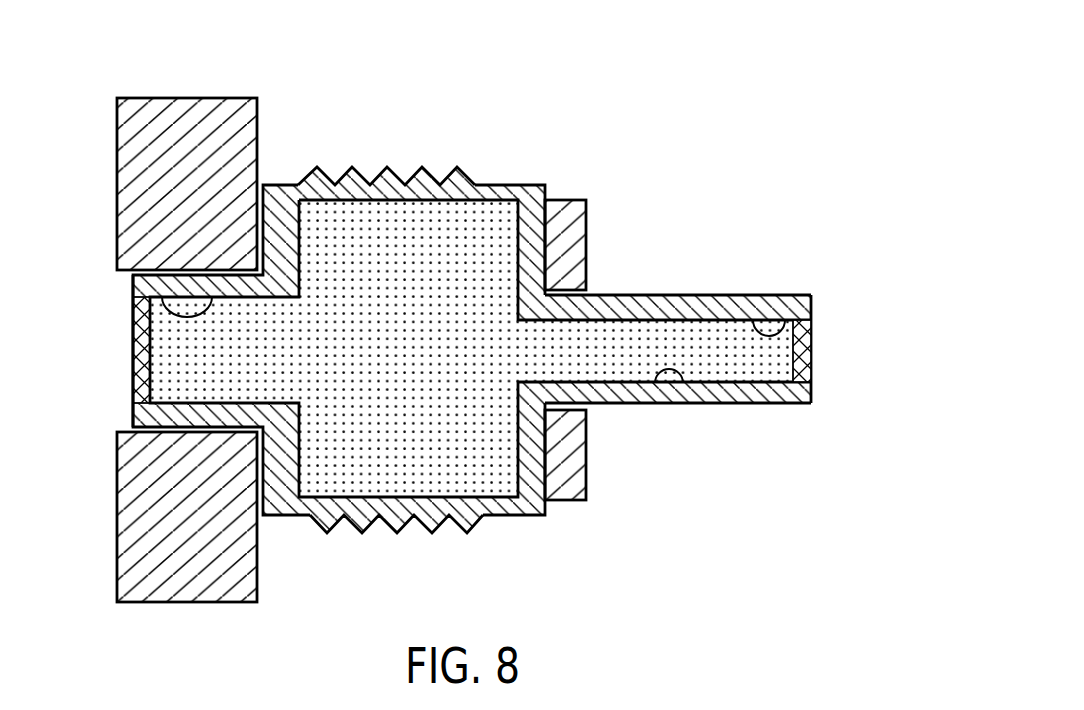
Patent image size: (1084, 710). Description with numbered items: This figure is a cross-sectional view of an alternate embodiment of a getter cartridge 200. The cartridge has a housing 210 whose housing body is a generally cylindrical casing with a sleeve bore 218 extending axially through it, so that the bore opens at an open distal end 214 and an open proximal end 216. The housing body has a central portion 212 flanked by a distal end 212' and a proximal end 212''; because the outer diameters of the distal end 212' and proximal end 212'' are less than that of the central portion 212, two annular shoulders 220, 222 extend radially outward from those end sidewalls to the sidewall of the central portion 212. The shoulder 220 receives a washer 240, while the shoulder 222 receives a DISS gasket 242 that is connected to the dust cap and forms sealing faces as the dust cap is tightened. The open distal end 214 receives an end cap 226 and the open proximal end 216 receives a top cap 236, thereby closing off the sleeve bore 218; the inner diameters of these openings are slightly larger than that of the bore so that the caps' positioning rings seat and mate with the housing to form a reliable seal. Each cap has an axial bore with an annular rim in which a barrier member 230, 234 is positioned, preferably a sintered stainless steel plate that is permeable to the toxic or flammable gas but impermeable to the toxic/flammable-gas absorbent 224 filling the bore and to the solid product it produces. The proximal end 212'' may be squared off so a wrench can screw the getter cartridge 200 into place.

The getter cartridge 200 is at (725, 104).
The housing 210 is at (288, 174).
The central portion 212 is at (387, 321).
The distal end 212' is at (678, 290).
The proximal end 212'' is at (243, 314).
The open distal end 214 is at (755, 320).
The open proximal end 216 is at (164, 297).
The sleeve bore 218 is at (670, 384).
The shoulder 220 is at (548, 505).
The shoulder 222 is at (264, 462).
The toxic/flammable-gas absorbent 224 is at (422, 383).
The end cap 226 is at (823, 361).
The barrier member 230 is at (812, 342).
The barrier member 234 is at (133, 343).
The top cap 236 is at (122, 372).
The washer 240 is at (598, 253).
The DISS gasket 242 is at (108, 132).